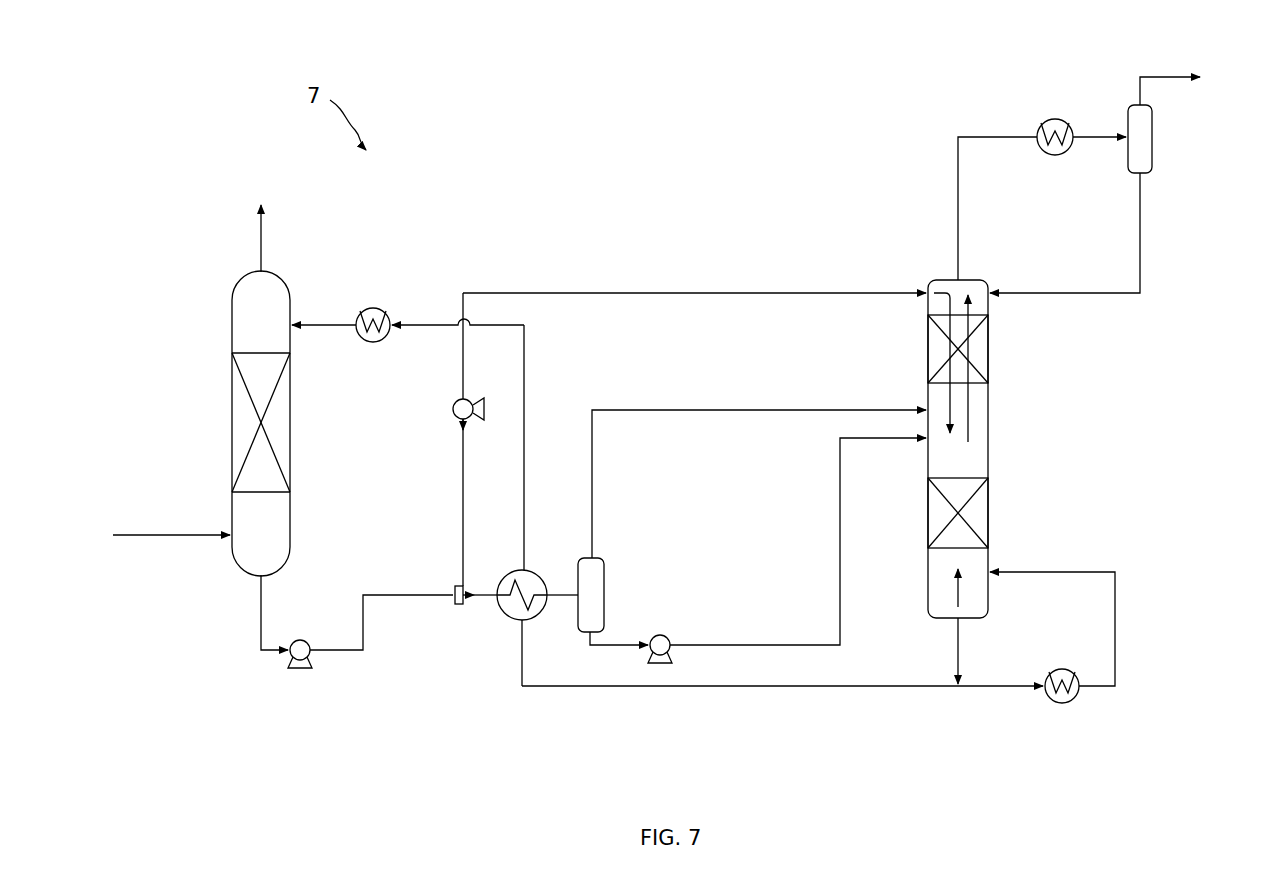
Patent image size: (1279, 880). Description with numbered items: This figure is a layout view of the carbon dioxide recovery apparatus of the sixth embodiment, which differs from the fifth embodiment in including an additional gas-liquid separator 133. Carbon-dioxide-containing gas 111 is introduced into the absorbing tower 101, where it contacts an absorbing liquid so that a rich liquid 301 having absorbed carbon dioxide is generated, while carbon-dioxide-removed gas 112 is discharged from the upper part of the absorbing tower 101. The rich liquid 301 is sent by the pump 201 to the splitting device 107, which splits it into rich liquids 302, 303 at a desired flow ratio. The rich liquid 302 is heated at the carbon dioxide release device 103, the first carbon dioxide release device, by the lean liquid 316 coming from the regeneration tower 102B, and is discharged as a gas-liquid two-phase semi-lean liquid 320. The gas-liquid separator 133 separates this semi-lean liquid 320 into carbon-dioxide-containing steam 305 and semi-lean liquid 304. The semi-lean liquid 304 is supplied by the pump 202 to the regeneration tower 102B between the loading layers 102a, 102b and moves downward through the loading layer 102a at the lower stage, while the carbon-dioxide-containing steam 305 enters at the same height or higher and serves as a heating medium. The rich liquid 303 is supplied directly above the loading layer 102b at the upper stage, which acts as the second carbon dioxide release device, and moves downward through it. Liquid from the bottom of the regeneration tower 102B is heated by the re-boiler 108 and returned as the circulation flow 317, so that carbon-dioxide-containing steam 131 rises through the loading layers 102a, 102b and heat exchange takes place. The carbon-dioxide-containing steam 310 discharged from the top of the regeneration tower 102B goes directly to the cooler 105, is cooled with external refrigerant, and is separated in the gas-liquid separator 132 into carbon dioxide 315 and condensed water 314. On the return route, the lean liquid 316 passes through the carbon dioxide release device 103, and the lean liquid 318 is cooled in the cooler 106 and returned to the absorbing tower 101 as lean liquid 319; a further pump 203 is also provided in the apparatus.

The absorbing tower 101 is at (230, 346).
The regeneration tower 102B is at (990, 410).
The loading layer 102a is at (955, 492).
The loading layer 102b is at (975, 348).
The carbon dioxide release device 103 is at (512, 574).
The cooler 105 is at (1052, 118).
The cooler 106 is at (373, 307).
The splitting device 107 is at (453, 592).
The re-boiler 108 is at (1047, 693).
The carbon-dioxide-containing gas 111 is at (151, 535).
The carbon-dioxide-removed gas 112 is at (255, 242).
The carbon-dioxide-containing steam 131 is at (962, 588).
The gas-liquid separator 132 is at (1155, 125).
The gas-liquid separator 133 is at (606, 557).
The pump 201 is at (302, 668).
The pump 202 is at (670, 636).
The pump 203 is at (455, 400).
The rich liquid 301 is at (275, 655).
The rich liquid 302 is at (502, 605).
The rich liquid 303 is at (461, 470).
The semi-lean liquid 304 is at (636, 652).
The carbon-dioxide-containing steam 305 is at (722, 413).
The carbon-dioxide-containing steam 310 is at (955, 207).
The condensed water 314 is at (1143, 212).
The carbon dioxide 315 is at (1140, 76).
The lean liquid 316 is at (782, 690).
The reboiler return line 317 is at (1098, 571).
The lean liquid 318 is at (525, 360).
The lean liquid 319 is at (330, 320).
The semi-lean liquid 320 is at (560, 605).